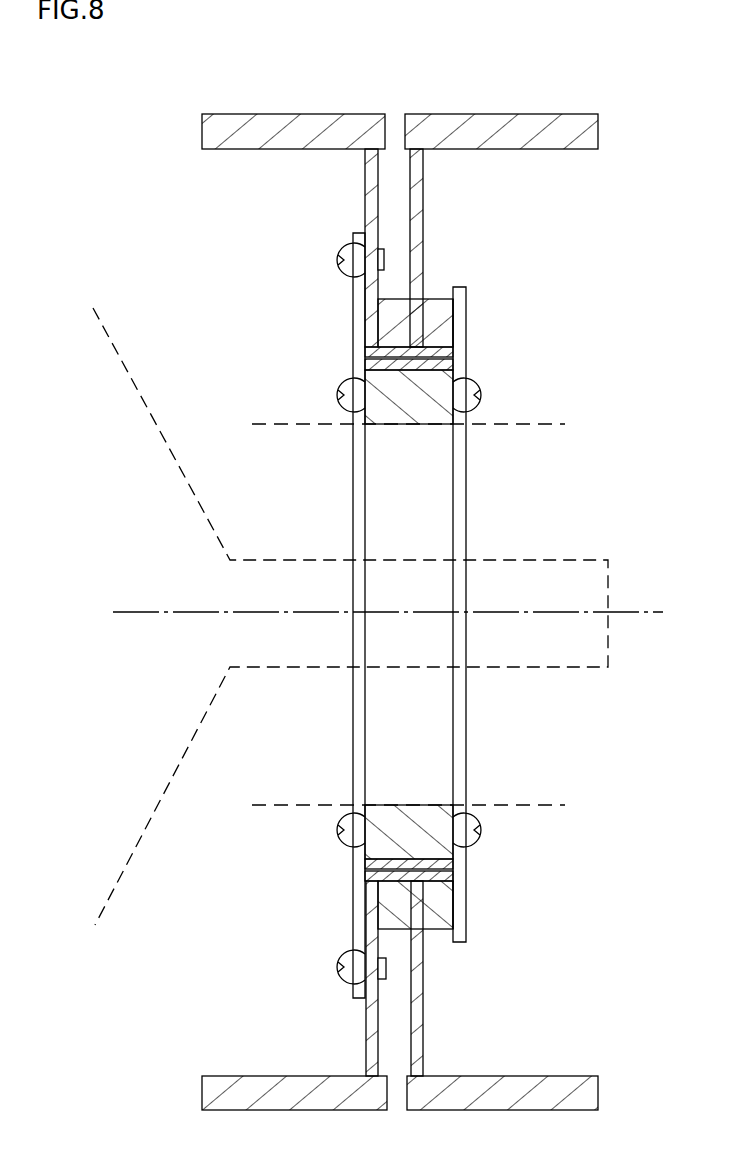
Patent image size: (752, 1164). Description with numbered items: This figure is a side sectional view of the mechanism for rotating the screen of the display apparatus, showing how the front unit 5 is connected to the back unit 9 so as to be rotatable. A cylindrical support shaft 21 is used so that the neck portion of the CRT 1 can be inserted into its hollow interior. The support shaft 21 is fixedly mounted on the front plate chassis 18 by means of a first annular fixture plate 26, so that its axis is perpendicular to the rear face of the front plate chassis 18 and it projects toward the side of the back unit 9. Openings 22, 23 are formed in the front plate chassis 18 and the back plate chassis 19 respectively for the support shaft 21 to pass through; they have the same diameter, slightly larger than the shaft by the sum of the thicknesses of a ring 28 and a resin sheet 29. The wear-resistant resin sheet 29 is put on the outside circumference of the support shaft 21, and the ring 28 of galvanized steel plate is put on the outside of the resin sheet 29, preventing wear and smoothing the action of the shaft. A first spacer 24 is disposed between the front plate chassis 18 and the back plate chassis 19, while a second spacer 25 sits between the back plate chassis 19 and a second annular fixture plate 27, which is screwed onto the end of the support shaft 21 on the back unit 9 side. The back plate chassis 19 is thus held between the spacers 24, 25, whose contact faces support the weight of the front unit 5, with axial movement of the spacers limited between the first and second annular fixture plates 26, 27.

The CRT 1 is at (190, 484).
The front unit 5 is at (272, 113).
The back unit 9 is at (548, 113).
The front plate chassis 18 is at (364, 182).
The back plate chassis 19 is at (423, 187).
The support shaft 21 is at (430, 410).
The opening 22 is at (353, 710).
The opening 23 is at (468, 710).
The first spacer 24 is at (385, 330).
The second spacer 25 is at (448, 330).
The first annular fixture plate 26 is at (353, 307).
The second annular fixture plate 27 is at (462, 297).
The ring 28 is at (453, 353).
The resin sheet 29 is at (450, 363).